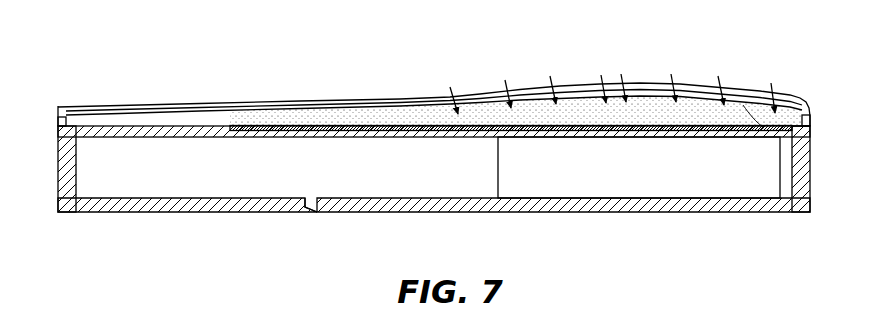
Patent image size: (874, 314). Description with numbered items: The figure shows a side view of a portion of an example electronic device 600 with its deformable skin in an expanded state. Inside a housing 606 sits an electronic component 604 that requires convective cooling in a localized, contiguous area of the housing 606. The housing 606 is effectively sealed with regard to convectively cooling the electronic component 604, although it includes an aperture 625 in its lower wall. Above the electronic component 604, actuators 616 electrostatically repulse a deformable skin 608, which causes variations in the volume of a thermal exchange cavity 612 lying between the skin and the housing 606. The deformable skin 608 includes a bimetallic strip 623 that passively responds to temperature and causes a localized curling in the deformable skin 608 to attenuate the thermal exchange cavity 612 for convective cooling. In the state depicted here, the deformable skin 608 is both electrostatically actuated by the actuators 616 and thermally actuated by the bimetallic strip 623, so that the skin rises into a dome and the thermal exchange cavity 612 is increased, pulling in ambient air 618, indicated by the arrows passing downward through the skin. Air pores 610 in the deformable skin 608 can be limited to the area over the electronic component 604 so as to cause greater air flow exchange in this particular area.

The electronic device 600 is at (98, 68).
The electronic component 604 is at (625, 189).
The housing 606 is at (58, 124).
The deformable skin 608 is at (360, 98).
The air pores 610 is at (680, 66).
The thermal exchange cavity 612 is at (398, 110).
The actuators 616 is at (297, 125).
The ambient air 618 is at (647, 66).
The bimetallic strip 623 is at (795, 133).
The aperture 625 is at (312, 201).